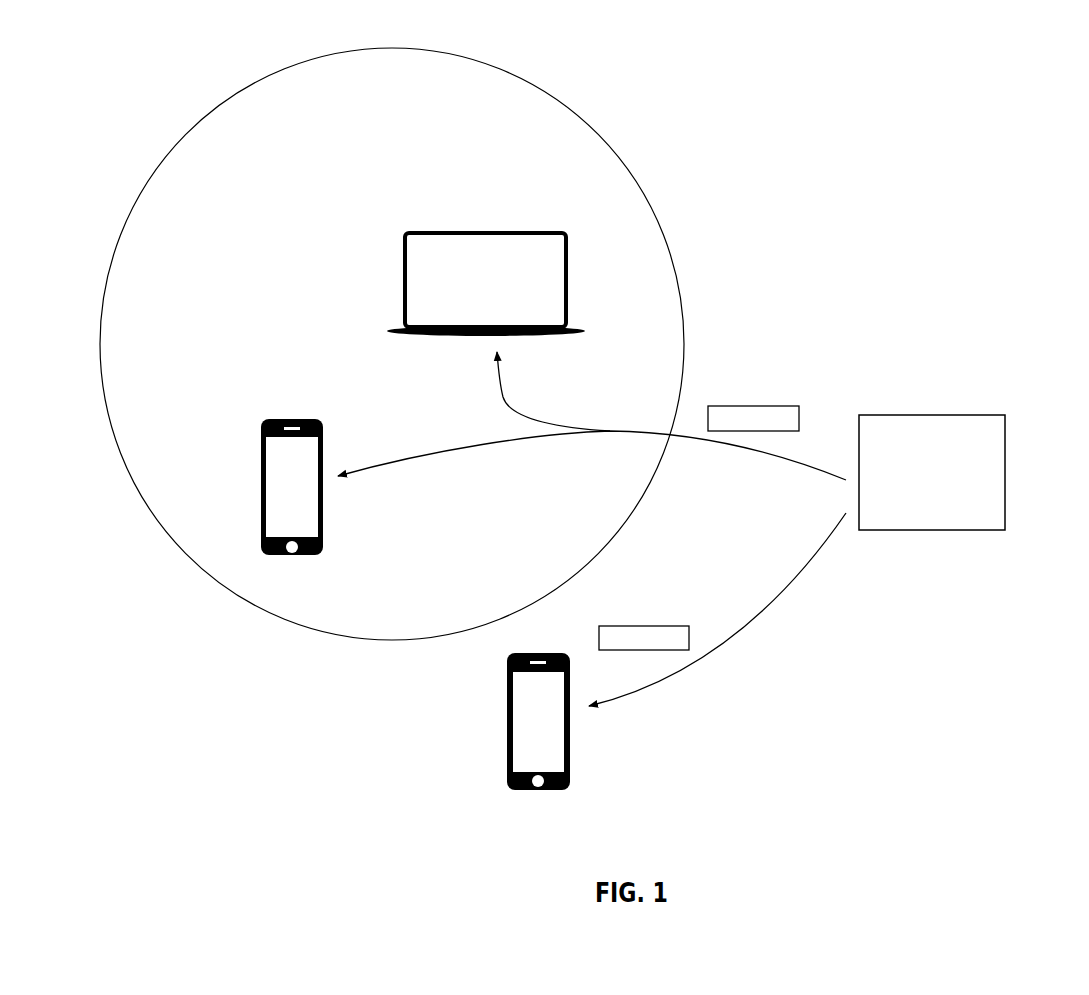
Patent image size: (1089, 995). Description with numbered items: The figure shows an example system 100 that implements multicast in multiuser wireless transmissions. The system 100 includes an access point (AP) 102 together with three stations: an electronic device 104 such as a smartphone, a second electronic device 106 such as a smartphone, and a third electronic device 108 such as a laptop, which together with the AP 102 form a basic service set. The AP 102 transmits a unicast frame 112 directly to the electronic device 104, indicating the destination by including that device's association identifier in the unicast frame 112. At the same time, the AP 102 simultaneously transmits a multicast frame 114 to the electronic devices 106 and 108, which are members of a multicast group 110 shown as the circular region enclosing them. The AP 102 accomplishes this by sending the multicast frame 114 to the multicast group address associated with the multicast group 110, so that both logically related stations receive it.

The system 100 is at (1030, 215).
The access point (AP) 102 is at (931, 531).
The electronic device 104 is at (497, 716).
The electronic device 106 is at (249, 484).
The electronic device 108 is at (486, 225).
The multicast group 110 is at (656, 186).
The unicast frame 112 is at (687, 599).
The multicast frame 114 is at (797, 378).